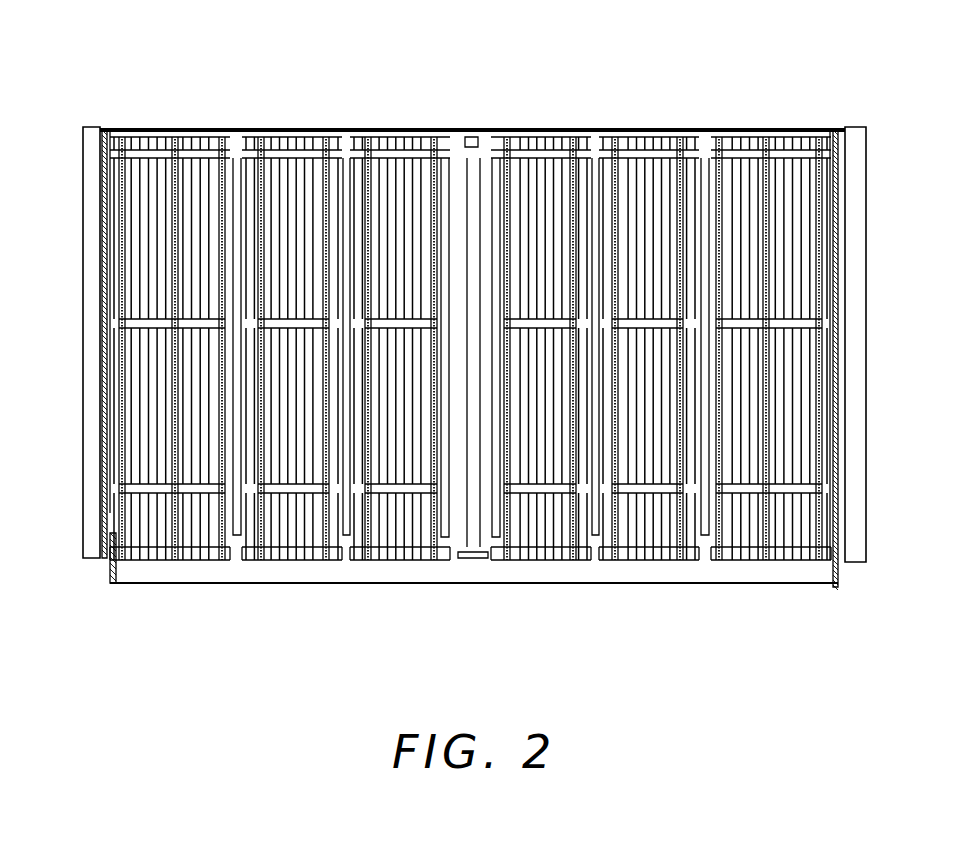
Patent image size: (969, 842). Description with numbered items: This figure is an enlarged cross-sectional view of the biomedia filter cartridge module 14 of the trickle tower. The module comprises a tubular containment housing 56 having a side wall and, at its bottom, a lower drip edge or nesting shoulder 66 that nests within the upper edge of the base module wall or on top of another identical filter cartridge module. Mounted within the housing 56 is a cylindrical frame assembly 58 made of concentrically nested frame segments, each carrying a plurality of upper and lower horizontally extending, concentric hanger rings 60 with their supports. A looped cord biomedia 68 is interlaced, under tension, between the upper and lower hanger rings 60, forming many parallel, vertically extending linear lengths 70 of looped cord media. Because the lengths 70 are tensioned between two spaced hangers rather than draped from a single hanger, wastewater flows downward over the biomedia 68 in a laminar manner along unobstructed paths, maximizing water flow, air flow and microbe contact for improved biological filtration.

The first biomedia filter cartridge module 14 is at (178, 623).
The tubular containment housing 56 is at (98, 438).
The cylindrical frame assembly 58 is at (540, 145).
The hanger rings 60 is at (402, 137).
The nesting shoulder 66 is at (538, 570).
The looped cord biomedia 68 is at (293, 185).
The linear lengths of looped cord biomedia 70 is at (188, 192).